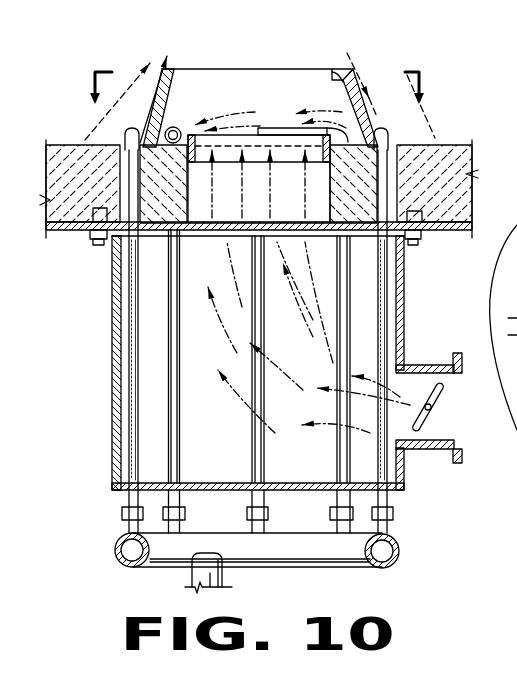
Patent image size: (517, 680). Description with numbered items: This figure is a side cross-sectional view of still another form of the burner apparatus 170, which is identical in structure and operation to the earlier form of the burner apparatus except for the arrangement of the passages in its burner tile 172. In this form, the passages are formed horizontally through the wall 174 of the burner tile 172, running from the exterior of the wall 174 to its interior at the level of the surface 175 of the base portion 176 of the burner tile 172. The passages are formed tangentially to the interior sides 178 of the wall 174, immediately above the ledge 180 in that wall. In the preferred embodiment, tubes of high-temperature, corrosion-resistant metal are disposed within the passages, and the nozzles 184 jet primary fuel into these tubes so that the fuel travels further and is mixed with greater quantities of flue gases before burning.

The burner apparatus 170 is at (278, 298).
The burner tile 172 is at (372, 122).
The wall 174 is at (204, 64).
The surface 175 is at (152, 147).
The base portion 176 is at (345, 191).
The interior sides 178 is at (343, 80).
The ledge 180 is at (345, 130).
The nozzles 184 is at (125, 134).